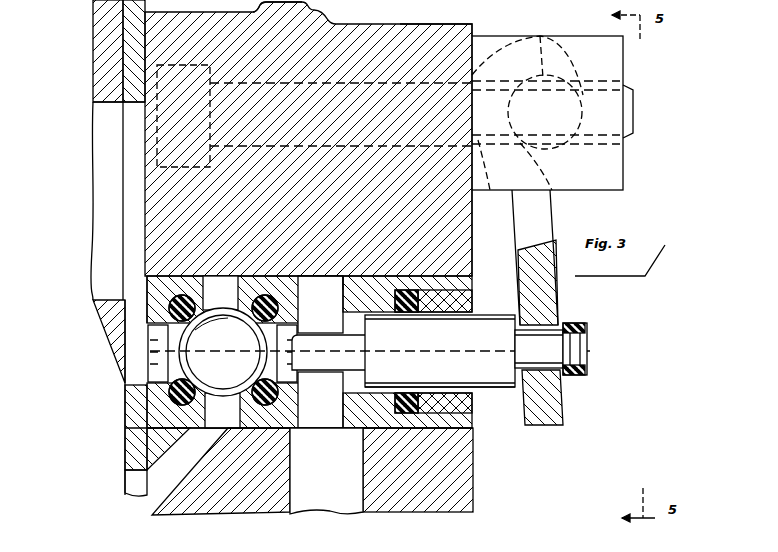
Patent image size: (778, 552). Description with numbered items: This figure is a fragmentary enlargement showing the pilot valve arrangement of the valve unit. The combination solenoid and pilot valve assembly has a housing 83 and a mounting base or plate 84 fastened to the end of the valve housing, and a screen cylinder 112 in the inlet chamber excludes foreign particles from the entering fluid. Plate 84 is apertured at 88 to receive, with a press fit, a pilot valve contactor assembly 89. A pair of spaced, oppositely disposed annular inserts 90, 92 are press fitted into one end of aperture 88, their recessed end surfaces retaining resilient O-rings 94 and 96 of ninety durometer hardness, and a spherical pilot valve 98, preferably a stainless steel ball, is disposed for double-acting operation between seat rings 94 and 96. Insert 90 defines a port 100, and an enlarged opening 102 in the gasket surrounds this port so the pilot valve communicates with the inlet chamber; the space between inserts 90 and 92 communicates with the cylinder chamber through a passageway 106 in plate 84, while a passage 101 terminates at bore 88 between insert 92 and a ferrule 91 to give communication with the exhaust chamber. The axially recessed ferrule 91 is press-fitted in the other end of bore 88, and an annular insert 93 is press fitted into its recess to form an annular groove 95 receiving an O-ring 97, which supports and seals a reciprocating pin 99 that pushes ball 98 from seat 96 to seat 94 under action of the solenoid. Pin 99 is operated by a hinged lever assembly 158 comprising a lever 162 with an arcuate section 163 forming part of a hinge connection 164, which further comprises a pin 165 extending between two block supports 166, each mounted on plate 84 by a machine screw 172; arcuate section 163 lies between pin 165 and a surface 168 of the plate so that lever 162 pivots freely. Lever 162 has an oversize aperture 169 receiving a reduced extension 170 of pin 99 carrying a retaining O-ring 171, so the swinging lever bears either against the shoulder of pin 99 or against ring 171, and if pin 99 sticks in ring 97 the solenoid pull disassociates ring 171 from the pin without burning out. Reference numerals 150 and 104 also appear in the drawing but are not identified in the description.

The mounting base plate 84 is at (370, 30).
The housing top portion 150 is at (359, 6).
The solenoid and pilot valve assembly unit housing 83 is at (504, 2).
The screen cylinder 112 is at (105, 40).
The enlarged opening 102 is at (123, 122).
The machine screw 172 is at (310, 86).
The surface of base block 168 is at (472, 216).
The block supports 166 is at (598, 183).
The pin 165 is at (566, 82).
The hinge connection 164 is at (558, 34).
The arcuate section 163 is at (486, 192).
The hinged operating lever assembly 158 is at (568, 297).
The oversize aperture 169 is at (522, 300).
The lever 162 is at (558, 404).
The annular insert 92 is at (268, 280).
The annular insert 90 is at (150, 288).
The O-ring seat ring 94 is at (220, 293).
The spherical pilot valve 98 is at (226, 392).
The port 100 is at (148, 325).
The O-ring seat ring 96 is at (270, 292).
The machined ferrule 91 is at (352, 296).
The aperture 88 is at (313, 277).
The pilot valve contactor assembly 89 is at (343, 272).
The lower retainer block 104 is at (296, 393).
The annular insert 93 is at (472, 296).
The annular groove 95 is at (418, 290).
The O-ring 97 is at (400, 316).
The reciprocating pin 99 is at (498, 385).
The reduced extension 170 is at (556, 351).
The retaining O-ring 171 is at (575, 328).
The passageway 106 is at (188, 470).
The passage 101 is at (342, 508).